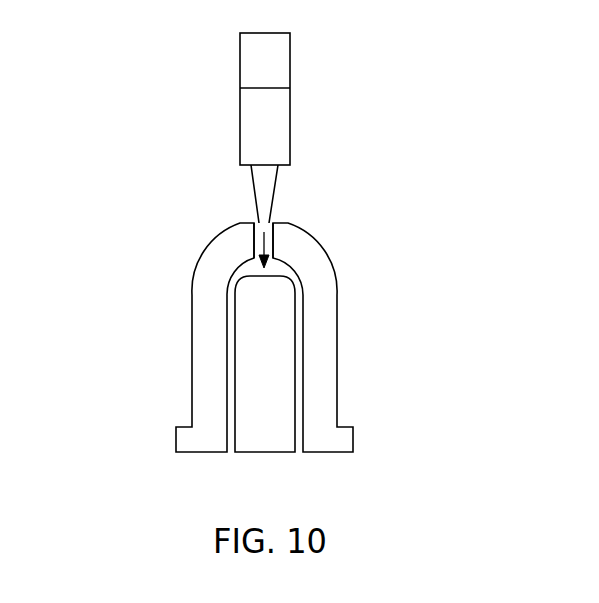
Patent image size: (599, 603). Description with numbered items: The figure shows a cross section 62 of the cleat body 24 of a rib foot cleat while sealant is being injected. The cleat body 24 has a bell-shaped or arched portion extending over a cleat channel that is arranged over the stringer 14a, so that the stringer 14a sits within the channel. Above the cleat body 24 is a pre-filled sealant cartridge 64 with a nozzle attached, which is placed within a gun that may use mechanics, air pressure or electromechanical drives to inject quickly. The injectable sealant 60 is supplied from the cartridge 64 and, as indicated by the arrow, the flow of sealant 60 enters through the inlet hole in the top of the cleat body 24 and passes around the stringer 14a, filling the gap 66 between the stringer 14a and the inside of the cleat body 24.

The cross section 62 is at (117, 220).
The sealant cartridge 64 is at (275, 120).
The injectable sealant 60 is at (272, 245).
The cleat body 24 is at (323, 335).
The gap 66 is at (232, 388).
The stringer 14a is at (270, 435).